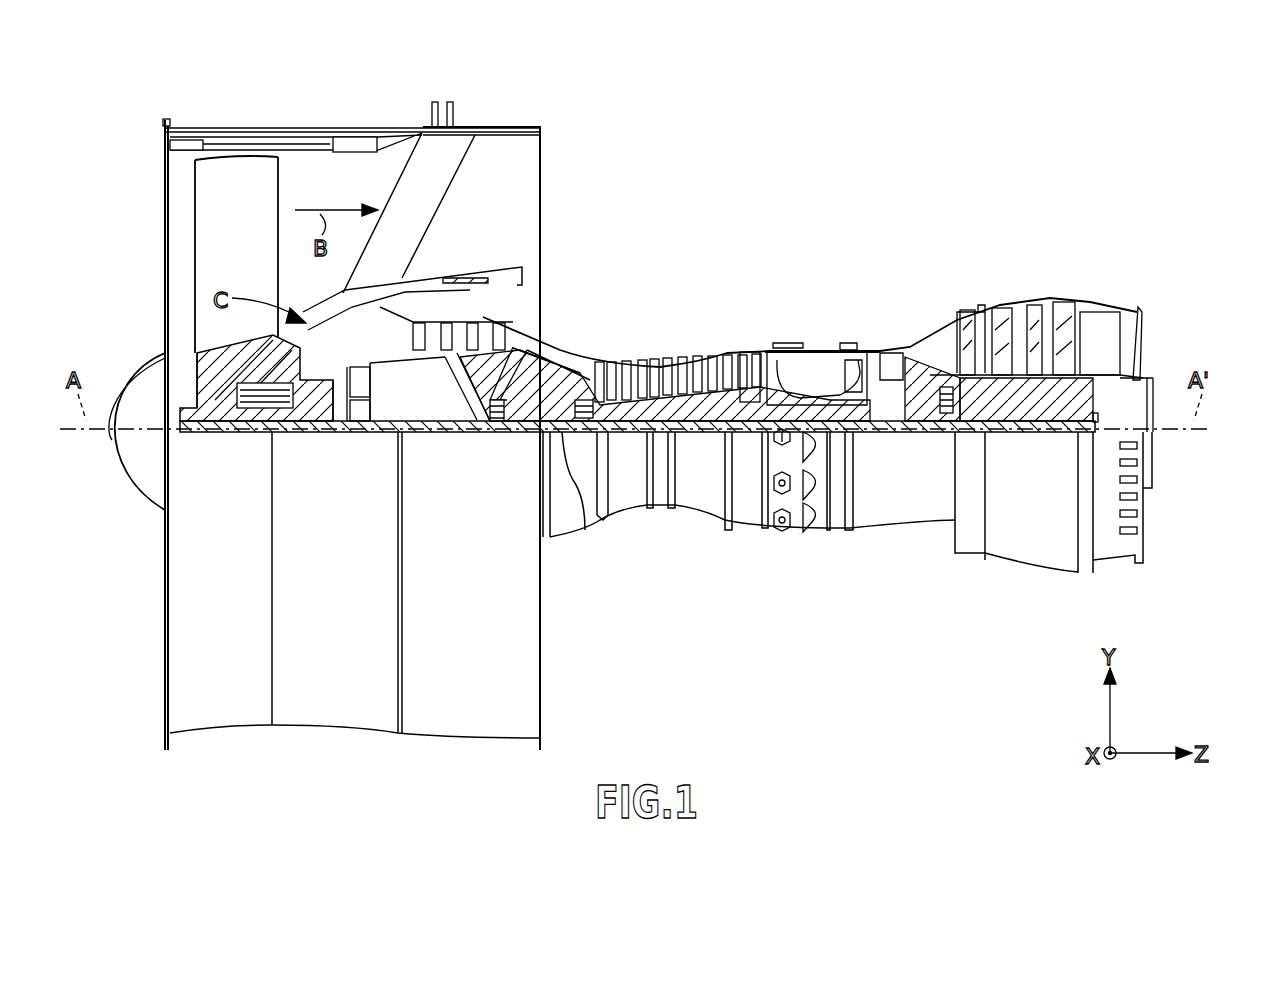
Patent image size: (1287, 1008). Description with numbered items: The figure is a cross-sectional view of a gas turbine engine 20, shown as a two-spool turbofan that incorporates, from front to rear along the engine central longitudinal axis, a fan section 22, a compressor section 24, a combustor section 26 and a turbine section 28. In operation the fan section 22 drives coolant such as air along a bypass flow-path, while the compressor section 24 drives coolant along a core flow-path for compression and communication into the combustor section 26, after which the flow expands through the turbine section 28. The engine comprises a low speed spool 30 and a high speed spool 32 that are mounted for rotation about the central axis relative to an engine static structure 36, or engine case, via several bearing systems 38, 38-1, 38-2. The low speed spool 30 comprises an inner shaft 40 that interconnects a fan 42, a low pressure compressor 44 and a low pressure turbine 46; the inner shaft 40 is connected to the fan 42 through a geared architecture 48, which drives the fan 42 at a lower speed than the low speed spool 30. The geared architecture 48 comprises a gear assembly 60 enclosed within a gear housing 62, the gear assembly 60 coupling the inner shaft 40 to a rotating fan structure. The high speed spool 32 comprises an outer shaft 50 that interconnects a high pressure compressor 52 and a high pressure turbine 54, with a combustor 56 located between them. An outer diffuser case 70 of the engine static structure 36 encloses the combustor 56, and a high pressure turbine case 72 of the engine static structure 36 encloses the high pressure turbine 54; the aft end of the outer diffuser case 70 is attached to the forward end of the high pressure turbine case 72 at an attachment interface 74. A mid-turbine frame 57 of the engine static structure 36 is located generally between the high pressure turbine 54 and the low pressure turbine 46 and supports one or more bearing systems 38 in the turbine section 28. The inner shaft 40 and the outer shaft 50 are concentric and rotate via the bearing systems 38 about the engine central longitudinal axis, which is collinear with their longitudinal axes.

The gas turbine engine 20 is at (864, 172).
The fan section 22 is at (398, 110).
The compressor section 24 is at (400, 240).
The combustor section 26 is at (880, 240).
The turbine section 28 is at (1087, 240).
The low speed spool 30 is at (708, 450).
The high speed spool 32 is at (740, 360).
The engine static structure 36 is at (750, 512).
The bearing system 38 is at (940, 424).
The bearing system 38-1 is at (244, 412).
The bearing system 38-2 is at (494, 424).
The inner shaft 40 is at (562, 440).
The fan 42 is at (236, 254).
The low pressure compressor 44 is at (473, 330).
The low pressure turbine 46 is at (1020, 320).
The geared architecture 48 is at (360, 448).
The outer shaft 50 is at (817, 413).
The high pressure compressor 52 is at (688, 360).
The high pressure turbine 54 is at (887, 352).
The combustor 56 is at (817, 372).
The mid-turbine frame 57 is at (935, 332).
The gear assembly 60 is at (362, 403).
The gear housing 62 is at (362, 378).
The outer diffuser case 70 is at (827, 517).
The high pressure turbine case 72 is at (922, 520).
The attachment interface 74 is at (847, 350).